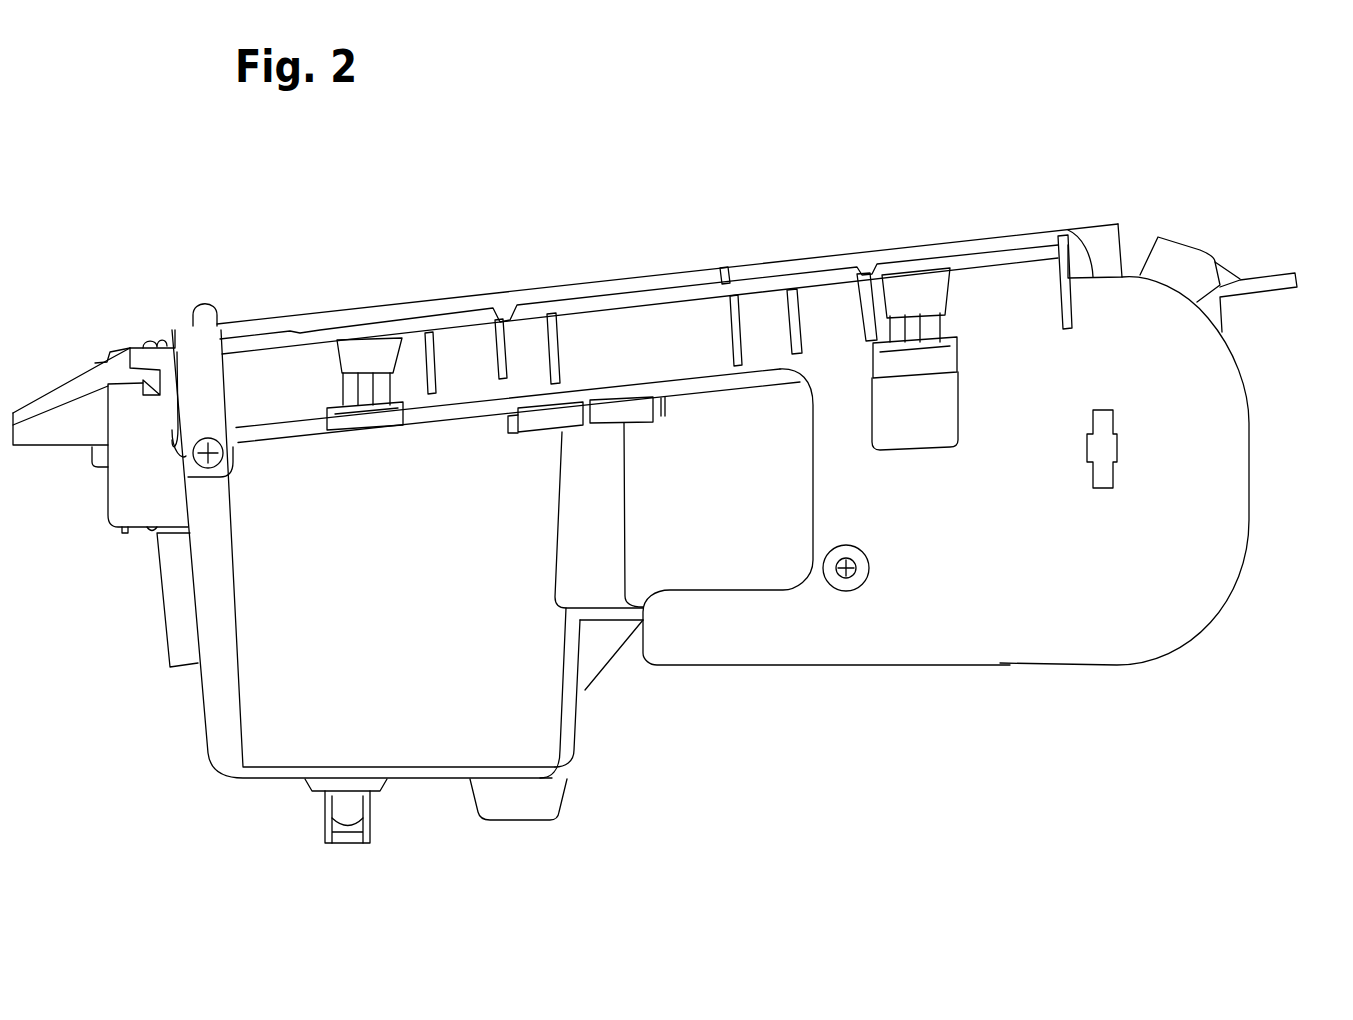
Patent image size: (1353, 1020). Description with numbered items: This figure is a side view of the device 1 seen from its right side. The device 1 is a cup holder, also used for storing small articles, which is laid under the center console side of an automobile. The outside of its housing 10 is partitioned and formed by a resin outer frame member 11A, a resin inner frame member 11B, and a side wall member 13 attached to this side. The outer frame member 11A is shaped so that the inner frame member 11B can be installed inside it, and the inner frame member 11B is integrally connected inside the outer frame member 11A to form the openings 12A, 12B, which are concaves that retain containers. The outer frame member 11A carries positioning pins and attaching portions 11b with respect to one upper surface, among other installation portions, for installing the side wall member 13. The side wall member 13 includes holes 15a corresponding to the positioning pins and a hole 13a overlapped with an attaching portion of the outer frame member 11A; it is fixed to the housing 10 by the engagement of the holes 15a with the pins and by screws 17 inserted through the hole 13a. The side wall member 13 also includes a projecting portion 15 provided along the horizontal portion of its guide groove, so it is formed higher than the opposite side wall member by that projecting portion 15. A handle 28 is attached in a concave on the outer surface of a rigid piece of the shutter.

The device 1 is at (885, 241).
The housing 10 is at (113, 723).
The outer frame member 11A is at (213, 760).
The inner frame member 11B is at (276, 691).
The attaching portions 11b is at (155, 338).
The opening 12A is at (724, 557).
The opening 12B is at (438, 740).
The side wall member 13 is at (1250, 424).
The hole 13a is at (855, 577).
The projecting portion 15 is at (988, 237).
The holes 15a is at (152, 362).
The screws 17 is at (197, 462).
The handle 28 is at (205, 306).